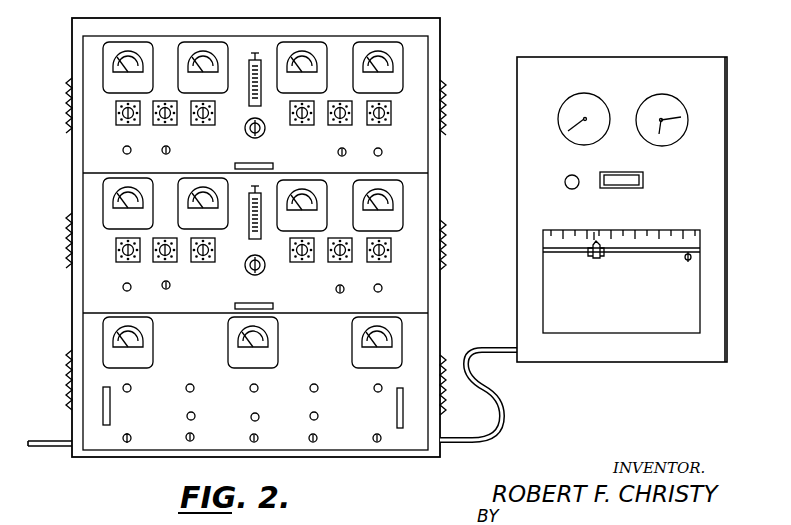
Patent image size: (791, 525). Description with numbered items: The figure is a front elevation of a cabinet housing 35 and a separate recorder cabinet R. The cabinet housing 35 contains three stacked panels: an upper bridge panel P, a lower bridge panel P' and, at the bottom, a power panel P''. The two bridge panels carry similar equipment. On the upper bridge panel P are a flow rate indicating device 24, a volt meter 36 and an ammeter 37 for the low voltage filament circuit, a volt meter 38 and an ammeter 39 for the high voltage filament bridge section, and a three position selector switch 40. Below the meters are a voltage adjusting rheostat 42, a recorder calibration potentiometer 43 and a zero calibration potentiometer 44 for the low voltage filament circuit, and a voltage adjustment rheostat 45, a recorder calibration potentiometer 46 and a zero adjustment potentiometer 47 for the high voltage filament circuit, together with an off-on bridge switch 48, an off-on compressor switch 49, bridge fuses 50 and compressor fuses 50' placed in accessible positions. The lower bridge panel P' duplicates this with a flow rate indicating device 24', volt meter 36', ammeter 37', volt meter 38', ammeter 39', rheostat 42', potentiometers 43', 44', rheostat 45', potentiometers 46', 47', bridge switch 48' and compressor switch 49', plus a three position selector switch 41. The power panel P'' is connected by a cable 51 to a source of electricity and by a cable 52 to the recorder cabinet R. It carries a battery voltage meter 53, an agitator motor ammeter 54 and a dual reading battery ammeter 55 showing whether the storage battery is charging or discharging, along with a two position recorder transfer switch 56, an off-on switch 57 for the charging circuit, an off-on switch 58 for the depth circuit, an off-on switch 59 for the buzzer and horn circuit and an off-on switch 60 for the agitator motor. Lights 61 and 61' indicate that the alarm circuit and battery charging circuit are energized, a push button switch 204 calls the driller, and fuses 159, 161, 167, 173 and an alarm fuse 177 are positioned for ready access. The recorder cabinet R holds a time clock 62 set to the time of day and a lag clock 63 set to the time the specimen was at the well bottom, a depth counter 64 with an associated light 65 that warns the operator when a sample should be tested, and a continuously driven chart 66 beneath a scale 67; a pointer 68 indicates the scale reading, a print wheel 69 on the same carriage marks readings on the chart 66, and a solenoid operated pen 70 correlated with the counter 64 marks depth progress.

The cabinet housing 35 is at (72, 24).
The upper bridge panel P is at (236, 107).
The lower bridge panel P' is at (233, 241).
The power panel P'' is at (232, 382).
The volt meter 36 is at (128, 54).
The ammeter 37 is at (203, 54).
The volt meter 38 is at (302, 54).
The ammeter 39 is at (378, 54).
The flow rate indicating device 24 is at (250, 60).
The three position selector switch 40 is at (265, 124).
The three position selector switch 41 is at (262, 272).
The voltage adjusting rheostat 42 is at (114, 117).
The recorder calibration potentiometer 43 is at (177, 123).
The zero calibration potentiometer 44 is at (215, 123).
The voltage adjustment rheostat 45 is at (308, 124).
The recorder calibration potentiometer 46 is at (349, 125).
The zero adjustment potentiometer 47 is at (393, 114).
The off-on bridge switch 48 is at (155, 139).
The off-on compressor switch 49 is at (353, 159).
The bridge fuse 50 is at (113, 219).
The compressor fuse 50' is at (399, 219).
The volt meter 36' is at (120, 190).
The ammeter 37' is at (203, 189).
The volt meter 38' is at (295, 218).
The ammeter 39' is at (415, 205).
The flow rate indicating device 24' is at (280, 194).
The voltage adjusting rheostat 42' is at (112, 248).
The recorder calibration potentiometer 43' is at (179, 262).
The zero calibration potentiometer 44' is at (217, 262).
The voltage adjustment rheostat 45' is at (305, 262).
The recorder calibration potentiometer 46' is at (351, 262).
The zero adjustment potentiometer 47' is at (396, 252).
The off-on bridge switch 48' is at (183, 294).
The off-on compressor switch 49' is at (323, 296).
The battery voltage meter 53 is at (153, 331).
The agitator motor ammeter 54 is at (356, 358).
The dual reading battery ammeter 55 is at (280, 331).
The recorder transfer switch 56 is at (131, 438).
The off-on switch 57 is at (194, 437).
The off-on switch 58 is at (258, 438).
The off-on switch 59 is at (317, 438).
The off-on switch 60 is at (381, 440).
The light 61 is at (329, 417).
The light 61' is at (172, 415).
The fuse 159 is at (381, 391).
The fuse 161 is at (258, 388).
The fuse 167 is at (194, 388).
The fuse 173 is at (131, 388).
The alarm fuse 177 is at (318, 388).
The push button switch 204 is at (259, 417).
The cable 51 is at (50, 438).
The cable 52 is at (503, 407).
The recorder cabinet R is at (640, 33).
The time clock 62 is at (575, 94).
The lag clock 63 is at (668, 96).
The counter 64 is at (643, 187).
The light 65 is at (575, 175).
The chart 66 is at (630, 316).
The scale 67 is at (652, 230).
The pointer 68 is at (598, 258).
The print wheel 69 is at (588, 255).
The pen 70 is at (688, 260).